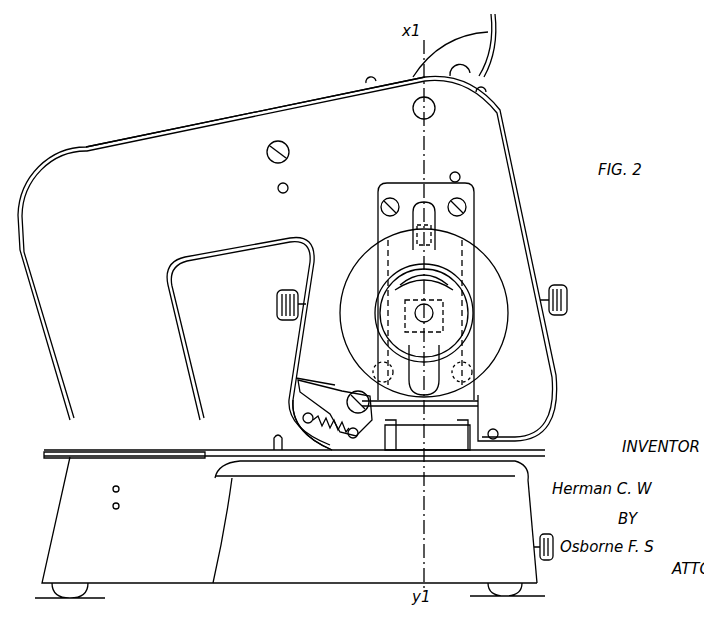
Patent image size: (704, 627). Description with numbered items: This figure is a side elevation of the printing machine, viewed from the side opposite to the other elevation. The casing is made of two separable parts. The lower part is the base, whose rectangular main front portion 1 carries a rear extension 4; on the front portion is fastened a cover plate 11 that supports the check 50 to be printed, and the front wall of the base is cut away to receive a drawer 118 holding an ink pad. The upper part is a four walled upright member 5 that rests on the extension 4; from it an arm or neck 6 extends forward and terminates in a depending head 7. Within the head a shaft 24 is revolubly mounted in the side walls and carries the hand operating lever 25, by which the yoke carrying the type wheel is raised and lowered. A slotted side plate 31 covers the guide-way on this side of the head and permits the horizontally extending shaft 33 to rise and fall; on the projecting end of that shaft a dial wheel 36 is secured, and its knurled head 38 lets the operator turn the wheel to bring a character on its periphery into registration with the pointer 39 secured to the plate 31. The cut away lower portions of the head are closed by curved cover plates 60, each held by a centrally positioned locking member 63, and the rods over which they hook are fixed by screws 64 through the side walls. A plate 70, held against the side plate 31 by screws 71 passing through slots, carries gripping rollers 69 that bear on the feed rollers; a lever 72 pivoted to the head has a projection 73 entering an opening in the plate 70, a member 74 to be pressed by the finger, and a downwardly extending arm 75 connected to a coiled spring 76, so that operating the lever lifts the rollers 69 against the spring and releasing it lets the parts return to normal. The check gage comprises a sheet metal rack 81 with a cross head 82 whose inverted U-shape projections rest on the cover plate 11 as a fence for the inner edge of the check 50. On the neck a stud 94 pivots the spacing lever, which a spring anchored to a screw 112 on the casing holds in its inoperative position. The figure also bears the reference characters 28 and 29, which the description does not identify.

The main front portion 1 is at (290, 539).
The rear extension 4 is at (289, 520).
The upright member 5 is at (231, 344).
The arm or neck 6 is at (255, 159).
The head 7 is at (500, 165).
The cover plate 11 is at (270, 470).
The shaft 24 is at (413, 109).
The hand operating lever 25 is at (470, 55).
The hole 28 is at (458, 173).
The thread hook 29 is at (500, 20).
The side plate 31 is at (378, 190).
The shaft 33 is at (432, 310).
The dial wheel 36 is at (370, 265).
The knurled head 38 is at (380, 300).
The pointer 39 is at (418, 225).
The check 50 is at (530, 450).
The cover plates 60 is at (300, 352).
The locking member 63 is at (284, 291).
The screws 64 is at (498, 432).
The gripping rollers 69 is at (445, 445).
The plate 70 is at (465, 405).
The screws 71 is at (470, 362).
The lever 72 is at (352, 395).
The projection 73 is at (427, 435).
The member 74 is at (298, 382).
The downwardly extending arm 75 is at (345, 450).
The coiled spring 76 is at (304, 418).
The sheet metal rack 81 is at (62, 452).
The cross head 82 is at (268, 448).
The stud 94 is at (278, 188).
The screw 112 is at (267, 152).
The drawer 118 is at (537, 536).